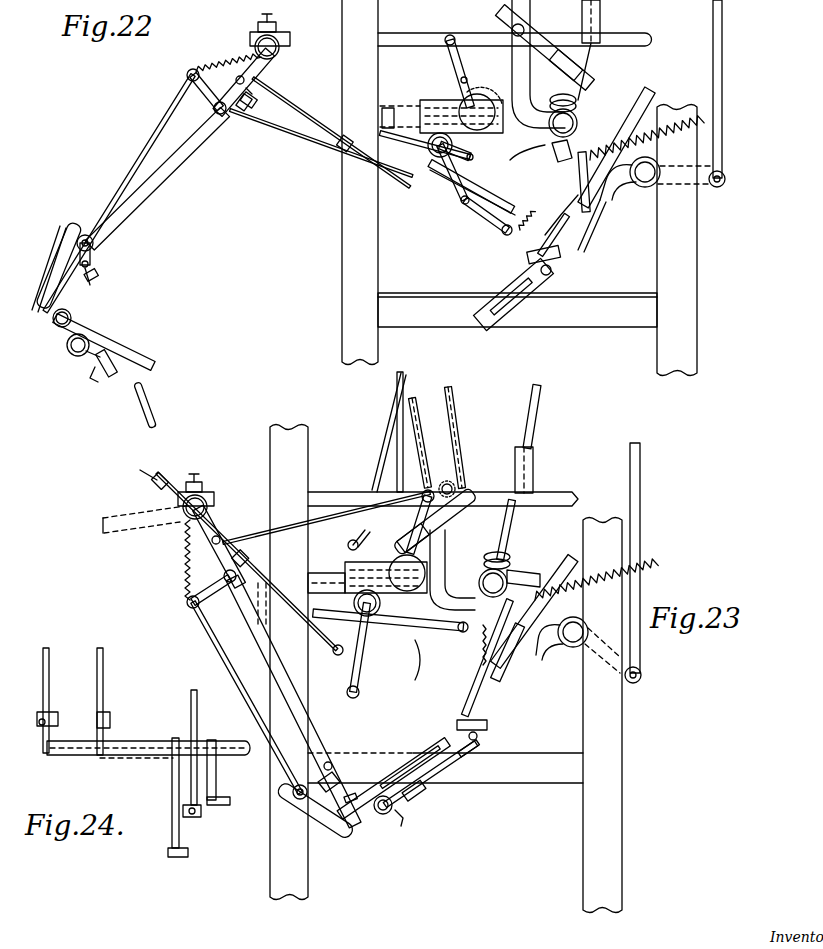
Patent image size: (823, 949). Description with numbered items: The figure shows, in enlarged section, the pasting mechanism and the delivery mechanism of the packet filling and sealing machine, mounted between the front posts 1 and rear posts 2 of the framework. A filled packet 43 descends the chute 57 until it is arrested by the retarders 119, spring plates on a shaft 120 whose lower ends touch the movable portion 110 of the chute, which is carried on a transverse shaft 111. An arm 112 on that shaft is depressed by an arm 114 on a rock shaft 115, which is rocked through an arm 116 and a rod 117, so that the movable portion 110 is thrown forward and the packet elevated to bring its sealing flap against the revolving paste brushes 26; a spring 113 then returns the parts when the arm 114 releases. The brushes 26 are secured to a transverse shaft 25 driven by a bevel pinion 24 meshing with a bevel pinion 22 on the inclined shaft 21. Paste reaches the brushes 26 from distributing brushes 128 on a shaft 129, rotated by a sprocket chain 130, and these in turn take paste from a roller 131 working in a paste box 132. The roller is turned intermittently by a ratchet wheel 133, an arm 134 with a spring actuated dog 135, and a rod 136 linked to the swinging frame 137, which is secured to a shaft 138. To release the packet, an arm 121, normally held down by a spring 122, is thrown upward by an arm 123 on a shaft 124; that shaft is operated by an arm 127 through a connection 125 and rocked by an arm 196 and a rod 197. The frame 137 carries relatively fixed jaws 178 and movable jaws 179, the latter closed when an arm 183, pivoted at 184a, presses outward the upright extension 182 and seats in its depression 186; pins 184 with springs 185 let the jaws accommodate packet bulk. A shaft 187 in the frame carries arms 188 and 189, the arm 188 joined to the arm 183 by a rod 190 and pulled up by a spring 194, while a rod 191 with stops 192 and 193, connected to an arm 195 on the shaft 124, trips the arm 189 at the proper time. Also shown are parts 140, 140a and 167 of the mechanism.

In FIG. 22, the front posts 1 is at (342, 230).
In FIG. 23, the front posts 1 is at (308, 874).
In FIG. 22, the rear posts 2 is at (697, 262).
In FIG. 23, the rear posts 2 is at (622, 816).
In FIG. 22, the shaft 21 is at (589, 50).
In FIG. 23, the shaft 21 is at (541, 394).
In FIG. 22, the bevel pinion 22 is at (572, 118).
In FIG. 23, the bevel pinion 22 is at (520, 568).
In FIG. 22, the bevel pinion 24 is at (546, 150).
In FIG. 23, the bevel pinion 24 is at (484, 582).
In FIG. 22, the transverse shaft 25 is at (519, 151).
In FIG. 23, the transverse shaft 25 is at (530, 570).
In FIG. 22, the paste brushes 26 is at (576, 118).
In FIG. 23, the paste brushes 26 is at (480, 585).
In FIG. 22, the packet 43 is at (594, 206).
In FIG. 23, the packet 43 is at (490, 690).
In FIG. 22, the chute 57 is at (660, 101).
In FIG. 23, the chute 57 is at (580, 562).
In FIG. 22, the movable portion 110 is at (577, 133).
In FIG. 23, the movable portion 110 is at (520, 640).
In FIG. 22, the transverse shaft 111 is at (592, 216).
In FIG. 23, the transverse shaft 111 is at (512, 668).
In FIG. 22, the arm 112 is at (545, 160).
In FIG. 22, the spring 113 is at (706, 129).
In FIG. 23, the spring 113 is at (650, 570).
In FIG. 22, the arm 114 is at (628, 214).
In FIG. 23, the arm 114 is at (562, 545).
In FIG. 22, the shaft 115 is at (652, 186).
In FIG. 23, the shaft 115 is at (583, 628).
In FIG. 22, the arm 116 is at (724, 186).
In FIG. 23, the arm 116 is at (642, 680).
In FIG. 22, the rod 117 is at (722, 26).
In FIG. 23, the rod 117 is at (641, 462).
In FIG. 22, the retarders 119 is at (562, 226).
In FIG. 23, the retarders 119 is at (478, 640).
In FIG. 22, the shaft 120 is at (546, 170).
In FIG. 22, the arm 121 is at (494, 256).
In FIG. 23, the arm 121 is at (420, 652).
In FIG. 22, the spring 122 is at (530, 206).
In FIG. 23, the spring 122 is at (468, 662).
In FIG. 22, the arm 123 is at (488, 236).
In FIG. 23, the arm 123 is at (430, 661).
In FIG. 24, the arm 123 is at (170, 846).
In FIG. 22, the shaft 124 is at (440, 162).
In FIG. 23, the shaft 124 is at (372, 620).
In FIG. 24, the shaft 124 is at (72, 756).
In FIG. 23, the connection 125 is at (384, 462).
In FIG. 24, the connection 125 is at (46, 650).
In FIG. 22, the arm 127 is at (428, 146).
In FIG. 23, the arm 127 is at (350, 548).
In FIG. 24, the arm 127 is at (50, 712).
In FIG. 22, the brushes 128 is at (532, 40).
In FIG. 23, the brushes 128 is at (472, 488).
In FIG. 23, the shaft 129 is at (446, 482).
In FIG. 23, the sprocket chain 130 is at (455, 398).
In FIG. 22, the roller 131 is at (458, 96).
In FIG. 23, the roller 131 is at (388, 560).
In FIG. 22, the box 132 is at (440, 103).
In FIG. 23, the box 132 is at (352, 571).
In FIG. 22, the ratchet wheel 133 is at (512, 151).
In FIG. 23, the ratchet wheel 133 is at (432, 562).
In FIG. 22, the arm 134 is at (456, 34).
In FIG. 23, the arm 134 is at (424, 492).
In FIG. 22, the dog 135 is at (480, 84).
In FIG. 22, the rod 136 is at (358, 52).
In FIG. 23, the rod 136 is at (293, 520).
In FIG. 22, the frame 137 is at (170, 194).
In FIG. 23, the frame 137 is at (262, 668).
In FIG. 22, the shaft 138 is at (270, 36).
In FIG. 23, the shaft 138 is at (207, 486).
In FIG. 22, the latch 140 is at (556, 266).
In FIG. 23, the latch 140 is at (489, 727).
In FIG. 22, the latch bar 140a is at (490, 322).
In FIG. 22, the link 167 is at (470, 222).
In FIG. 23, the link 167 is at (360, 694).
In FIG. 24, the link 167 is at (216, 778).
In FIG. 22, the jaws 178 is at (143, 358).
In FIG. 23, the jaws 178 is at (388, 768).
In FIG. 22, the jaws 179 is at (108, 376).
In FIG. 23, the jaws 179 is at (420, 792).
In FIG. 22, the upright extension 182 is at (74, 222).
In FIG. 23, the upright extension 182 is at (277, 794).
In FIG. 22, the arm 183 is at (96, 262).
In FIG. 23, the arm 183 is at (327, 760).
In FIG. 22, the pins 184 is at (95, 392).
In FIG. 23, the pins 184 is at (405, 806).
In FIG. 22, the pivot 184a is at (95, 290).
In FIG. 23, the pivot 184a is at (378, 840).
In FIG. 22, the springs 185 is at (84, 372).
In FIG. 23, the springs 185 is at (402, 830).
In FIG. 22, the depression 186 is at (64, 254).
In FIG. 22, the shaft 187 is at (252, 118).
In FIG. 22, the arm 188 is at (187, 78).
In FIG. 23, the arm 188 is at (192, 610).
In FIG. 22, the arm 189 is at (276, 140).
In FIG. 22, the rod 190 is at (142, 163).
In FIG. 23, the rod 190 is at (262, 710).
In FIG. 22, the rod 191 is at (302, 142).
In FIG. 23, the rod 191 is at (268, 600).
In FIG. 24, the rod 191 is at (190, 702).
In FIG. 22, the stop 192 is at (258, 104).
In FIG. 23, the stop 192 is at (158, 476).
In FIG. 22, the stop 193 is at (347, 154).
In FIG. 23, the stop 193 is at (250, 562).
In FIG. 22, the spring 194 is at (226, 64).
In FIG. 23, the spring 194 is at (184, 573).
In FIG. 22, the arm 195 is at (458, 202).
In FIG. 23, the arm 195 is at (338, 655).
In FIG. 24, the arm 195 is at (172, 782).
In FIG. 22, the arm 196 is at (500, 164).
In FIG. 23, the arm 196 is at (415, 640).
In FIG. 24, the arm 196 is at (110, 727).
In FIG. 23, the rod 197 is at (404, 376).
In FIG. 24, the rod 197 is at (104, 683).